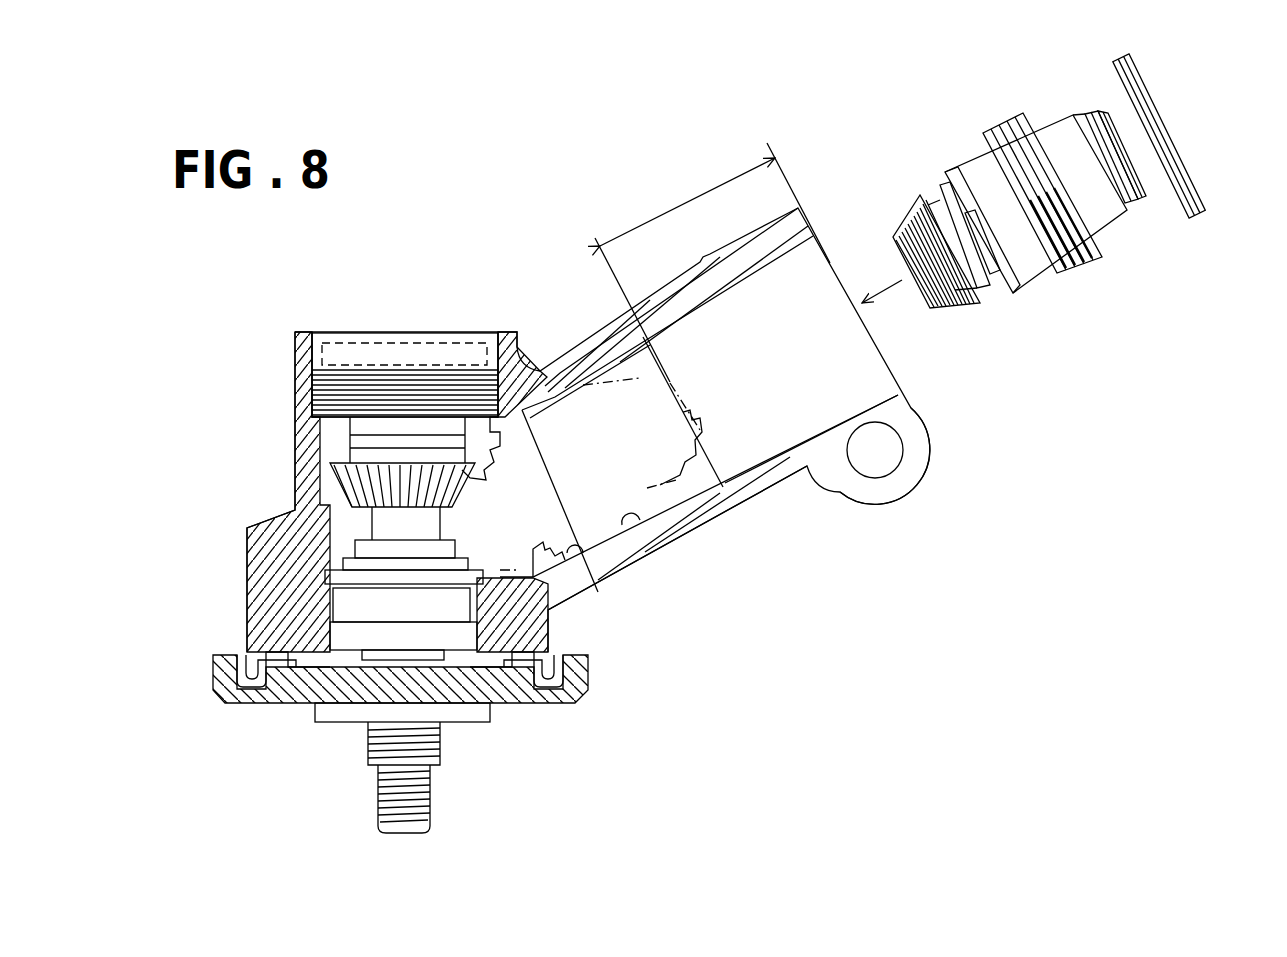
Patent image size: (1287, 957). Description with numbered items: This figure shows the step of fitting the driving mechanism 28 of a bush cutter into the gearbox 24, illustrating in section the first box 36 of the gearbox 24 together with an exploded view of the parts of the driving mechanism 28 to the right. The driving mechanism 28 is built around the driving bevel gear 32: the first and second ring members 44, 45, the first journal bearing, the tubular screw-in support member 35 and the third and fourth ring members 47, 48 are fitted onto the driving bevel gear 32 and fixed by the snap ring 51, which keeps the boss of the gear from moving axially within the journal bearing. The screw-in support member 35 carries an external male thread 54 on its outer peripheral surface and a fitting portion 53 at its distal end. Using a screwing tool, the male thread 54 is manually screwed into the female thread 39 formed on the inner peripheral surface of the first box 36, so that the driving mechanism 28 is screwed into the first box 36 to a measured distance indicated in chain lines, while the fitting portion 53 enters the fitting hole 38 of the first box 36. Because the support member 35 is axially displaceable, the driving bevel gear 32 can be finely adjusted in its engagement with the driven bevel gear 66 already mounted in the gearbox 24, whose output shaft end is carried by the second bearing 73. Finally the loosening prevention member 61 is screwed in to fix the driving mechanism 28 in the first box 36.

The gearbox 24 is at (494, 258).
The driving mechanism 28 is at (610, 365).
The driving bevel gear 32 is at (905, 215).
The screw-in support member 35 is at (1048, 105).
The first box 36 is at (781, 490).
The fitting hole 38 is at (588, 548).
The female thread 39 is at (652, 522).
The first ring member 44 is at (992, 300).
The second ring member 45 is at (1004, 292).
The third ring member 47 is at (1135, 200).
The fourth ring member 48 is at (1153, 241).
The snap ring 51 is at (1140, 190).
The fitting portion 53 is at (962, 165).
The male thread 54 is at (1005, 108).
The loosening prevention member 61 is at (1150, 112).
The driven bevel gear 66 is at (357, 483).
The second bearing 73 is at (330, 398).